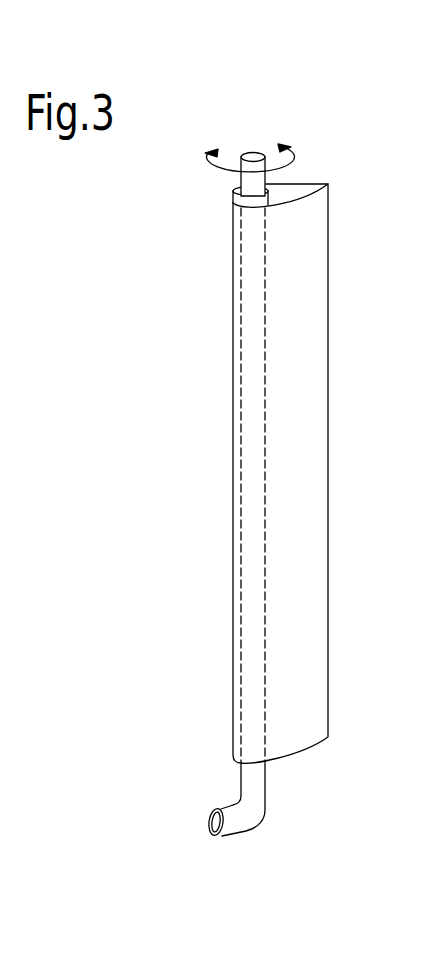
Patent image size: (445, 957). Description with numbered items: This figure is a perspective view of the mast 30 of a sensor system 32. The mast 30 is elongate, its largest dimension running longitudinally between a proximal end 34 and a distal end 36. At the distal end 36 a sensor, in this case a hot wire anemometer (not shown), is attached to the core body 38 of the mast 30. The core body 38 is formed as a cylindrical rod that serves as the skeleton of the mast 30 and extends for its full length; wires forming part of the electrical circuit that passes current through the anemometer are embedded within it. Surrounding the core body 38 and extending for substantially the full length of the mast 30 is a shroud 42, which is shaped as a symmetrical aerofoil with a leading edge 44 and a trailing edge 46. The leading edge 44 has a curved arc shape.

The mast 30 is at (287, 300).
The sensor system 32 is at (340, 420).
The proximal end 34 is at (189, 180).
The distal end 36 is at (180, 805).
The core body 38 is at (252, 170).
The shroud 42 is at (280, 565).
The leading edge 44 is at (233, 512).
The trailing edge 46 is at (328, 670).